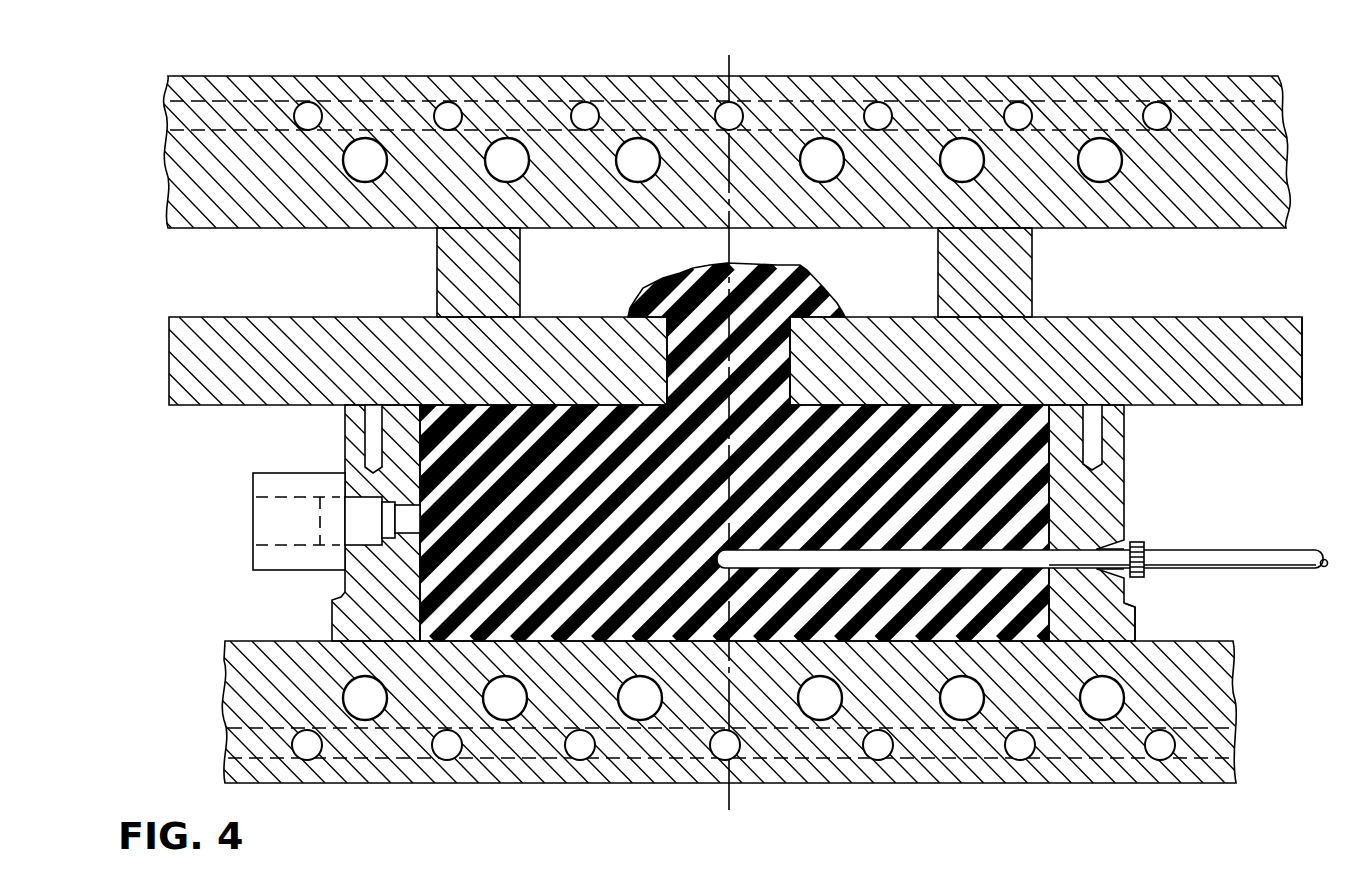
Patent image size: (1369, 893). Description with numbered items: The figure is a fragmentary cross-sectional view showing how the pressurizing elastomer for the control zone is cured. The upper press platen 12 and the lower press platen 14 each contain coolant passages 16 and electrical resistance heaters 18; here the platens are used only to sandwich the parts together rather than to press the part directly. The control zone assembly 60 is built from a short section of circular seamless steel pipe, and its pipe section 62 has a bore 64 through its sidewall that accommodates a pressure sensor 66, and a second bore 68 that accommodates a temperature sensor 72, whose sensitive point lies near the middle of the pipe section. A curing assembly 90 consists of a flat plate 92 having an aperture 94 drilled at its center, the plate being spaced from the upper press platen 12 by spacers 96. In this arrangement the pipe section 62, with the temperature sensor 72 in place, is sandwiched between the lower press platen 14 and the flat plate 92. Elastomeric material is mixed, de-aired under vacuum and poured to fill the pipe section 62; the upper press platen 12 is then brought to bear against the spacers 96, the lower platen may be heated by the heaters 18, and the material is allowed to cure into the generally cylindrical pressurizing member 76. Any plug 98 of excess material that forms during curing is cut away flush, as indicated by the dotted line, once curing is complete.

The upper press platen 12 is at (436, 72).
The lower press platen 14 is at (582, 788).
The coolant passages 16 is at (306, 105).
The electrical resistance heaters 18 is at (733, 429).
The control zone assembly 60 is at (1142, 621).
The pipe section 62 is at (427, 575).
The bore 64 is at (378, 518).
The pressure sensor 66 is at (279, 560).
The second bore 68 is at (1066, 552).
The temperature sensor 72 is at (1210, 549).
The pressurizing member 76 is at (1033, 517).
The curing assembly 90 is at (1305, 378).
The flat plate 92 is at (1158, 317).
The aperture 94 is at (795, 348).
The spacers 96 is at (521, 273).
The plug 98 is at (795, 295).